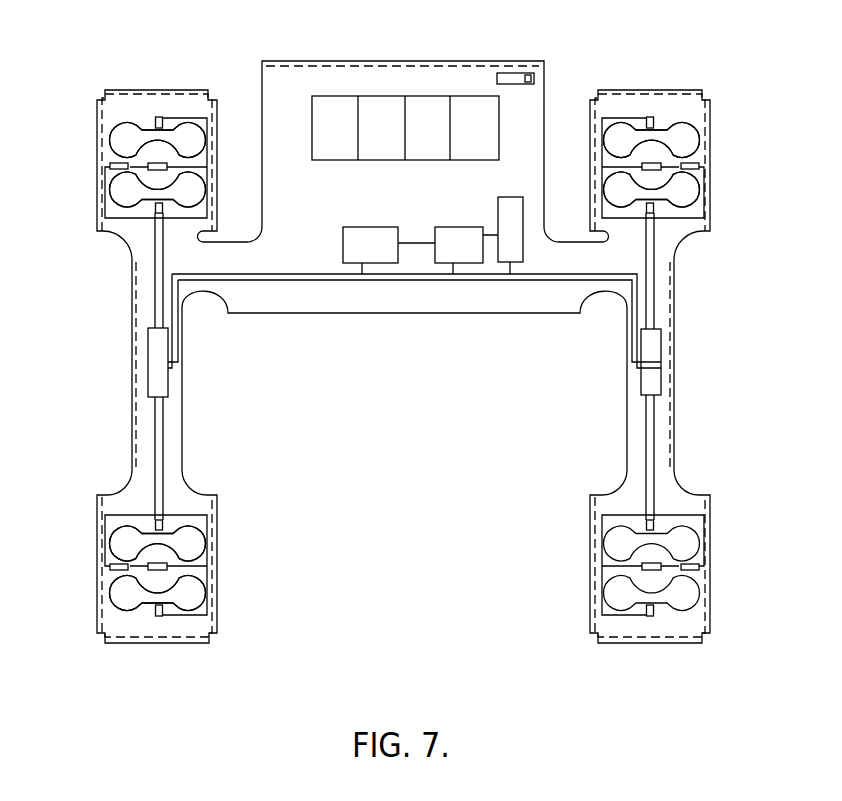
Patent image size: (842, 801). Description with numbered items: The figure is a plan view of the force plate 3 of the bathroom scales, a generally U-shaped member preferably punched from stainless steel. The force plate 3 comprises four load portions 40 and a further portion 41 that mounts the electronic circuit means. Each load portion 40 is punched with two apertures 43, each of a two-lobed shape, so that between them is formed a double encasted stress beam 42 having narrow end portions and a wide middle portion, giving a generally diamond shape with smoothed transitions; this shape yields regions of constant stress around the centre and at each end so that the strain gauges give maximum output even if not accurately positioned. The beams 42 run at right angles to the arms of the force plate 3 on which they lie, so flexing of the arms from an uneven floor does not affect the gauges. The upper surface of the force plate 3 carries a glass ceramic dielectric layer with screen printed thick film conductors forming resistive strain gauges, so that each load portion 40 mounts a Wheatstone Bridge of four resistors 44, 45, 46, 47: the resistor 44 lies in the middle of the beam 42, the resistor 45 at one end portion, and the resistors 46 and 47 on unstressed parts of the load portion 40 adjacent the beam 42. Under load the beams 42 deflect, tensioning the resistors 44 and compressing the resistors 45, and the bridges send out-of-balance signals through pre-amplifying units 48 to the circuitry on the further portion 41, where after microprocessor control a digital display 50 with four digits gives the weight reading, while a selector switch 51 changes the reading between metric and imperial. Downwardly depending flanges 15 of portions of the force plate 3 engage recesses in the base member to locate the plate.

The force plate 3 is at (598, 42).
The downwardly depending flanges 15 is at (684, 88).
The load portion 40 is at (160, 105).
The further portion 41 is at (380, 75).
The double encasted stress beam 42 is at (158, 178).
The aperture 43 is at (125, 187).
The resistor 44 is at (648, 569).
The resistor 45 is at (700, 567).
The resistor 46 is at (660, 527).
The resistor 47 is at (660, 615).
The pre-amplifying unit 48 is at (163, 373).
The digital display 50 is at (460, 110).
The selector switch 51 is at (518, 78).